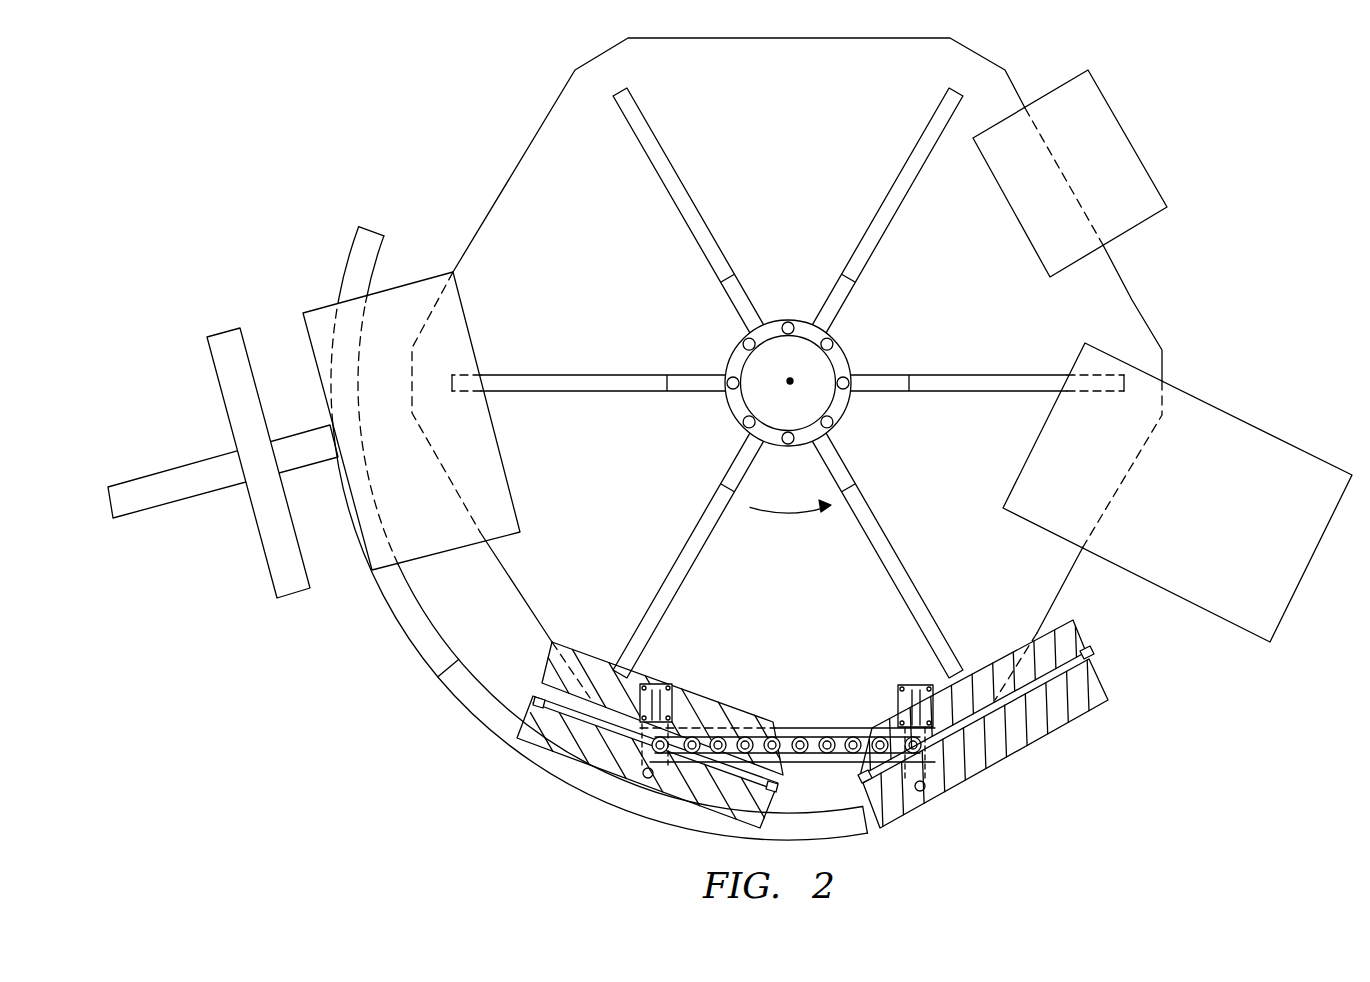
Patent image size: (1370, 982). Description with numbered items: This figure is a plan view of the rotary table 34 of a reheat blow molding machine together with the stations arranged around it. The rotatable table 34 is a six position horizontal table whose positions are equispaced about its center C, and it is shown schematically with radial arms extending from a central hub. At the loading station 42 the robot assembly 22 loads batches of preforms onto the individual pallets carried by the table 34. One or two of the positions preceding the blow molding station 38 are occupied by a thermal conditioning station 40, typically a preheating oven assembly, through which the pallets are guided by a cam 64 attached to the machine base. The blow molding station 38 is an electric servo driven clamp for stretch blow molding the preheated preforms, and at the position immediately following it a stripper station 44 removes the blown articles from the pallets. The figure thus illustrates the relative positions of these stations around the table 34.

The robot assembly 22 is at (345, 546).
The rotatable table 34 is at (585, 296).
The blow molding station 38 is at (1237, 432).
The thermal conditioning station 40 is at (590, 748).
The loading station 42 is at (403, 293).
The stripper station 44 is at (1125, 168).
The cam 64 is at (537, 760).
The center of the rotary table C is at (790, 372).